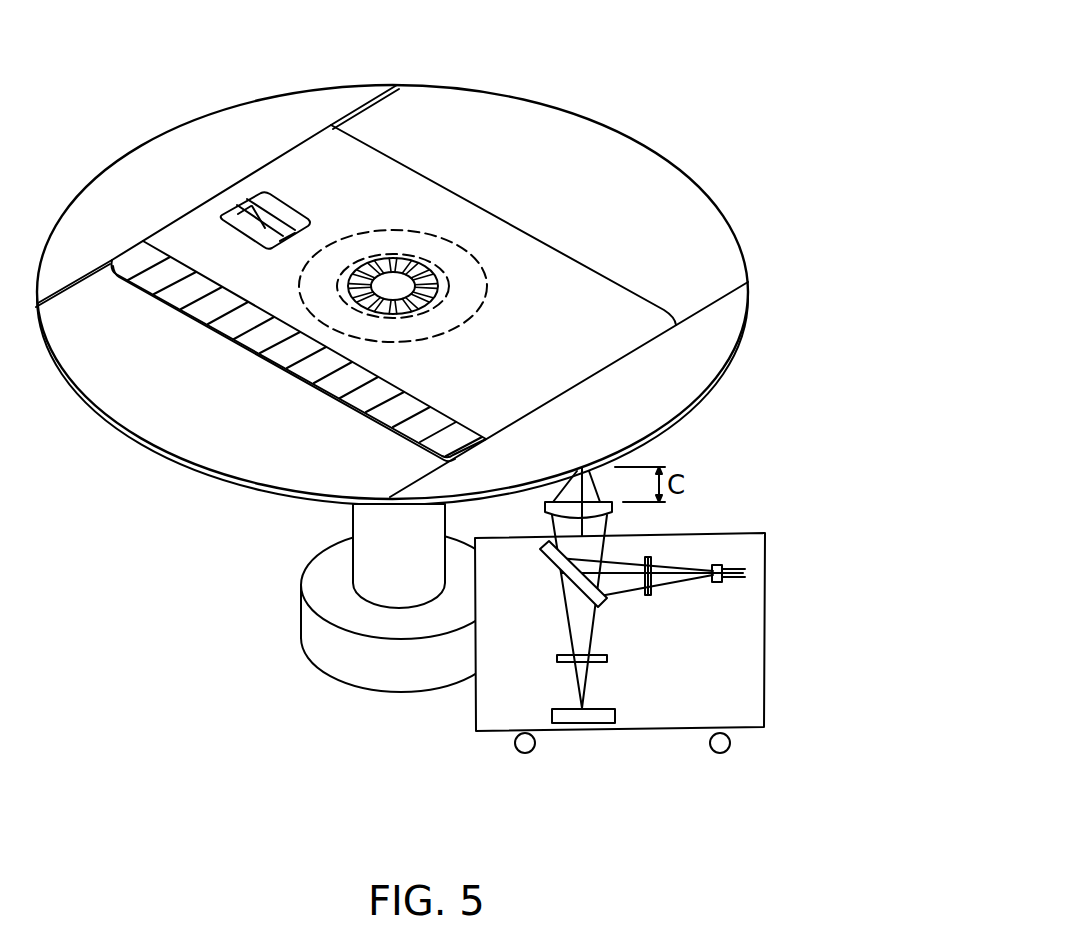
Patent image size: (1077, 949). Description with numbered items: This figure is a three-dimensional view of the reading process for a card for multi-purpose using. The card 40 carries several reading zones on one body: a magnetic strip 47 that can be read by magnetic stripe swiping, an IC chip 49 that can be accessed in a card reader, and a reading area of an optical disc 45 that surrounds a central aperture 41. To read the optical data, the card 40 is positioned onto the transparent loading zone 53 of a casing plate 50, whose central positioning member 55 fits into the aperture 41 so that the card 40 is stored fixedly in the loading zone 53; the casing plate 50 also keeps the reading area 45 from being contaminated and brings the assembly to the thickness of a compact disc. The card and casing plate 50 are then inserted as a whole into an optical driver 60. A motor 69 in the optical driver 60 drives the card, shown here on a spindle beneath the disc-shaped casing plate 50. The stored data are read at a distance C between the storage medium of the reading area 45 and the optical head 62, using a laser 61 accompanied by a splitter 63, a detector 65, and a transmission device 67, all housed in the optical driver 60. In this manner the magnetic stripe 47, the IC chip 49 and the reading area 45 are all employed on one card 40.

The card 40 is at (310, 157).
The aperture 41 is at (363, 307).
The reading area of an optical disc 45 is at (478, 287).
The magnetic strip 47 is at (127, 257).
The IC chip 49 is at (230, 207).
The casing plate 50 is at (238, 122).
The transparent loading zone 53 is at (620, 158).
The positioning member 55 is at (405, 257).
The optical driver 60 is at (772, 568).
The laser 61 is at (733, 571).
The optical head 62 is at (752, 622).
The splitter 63 is at (563, 566).
The detector 65 is at (583, 723).
The transmission device 67 is at (720, 753).
The motor 69 is at (301, 618).